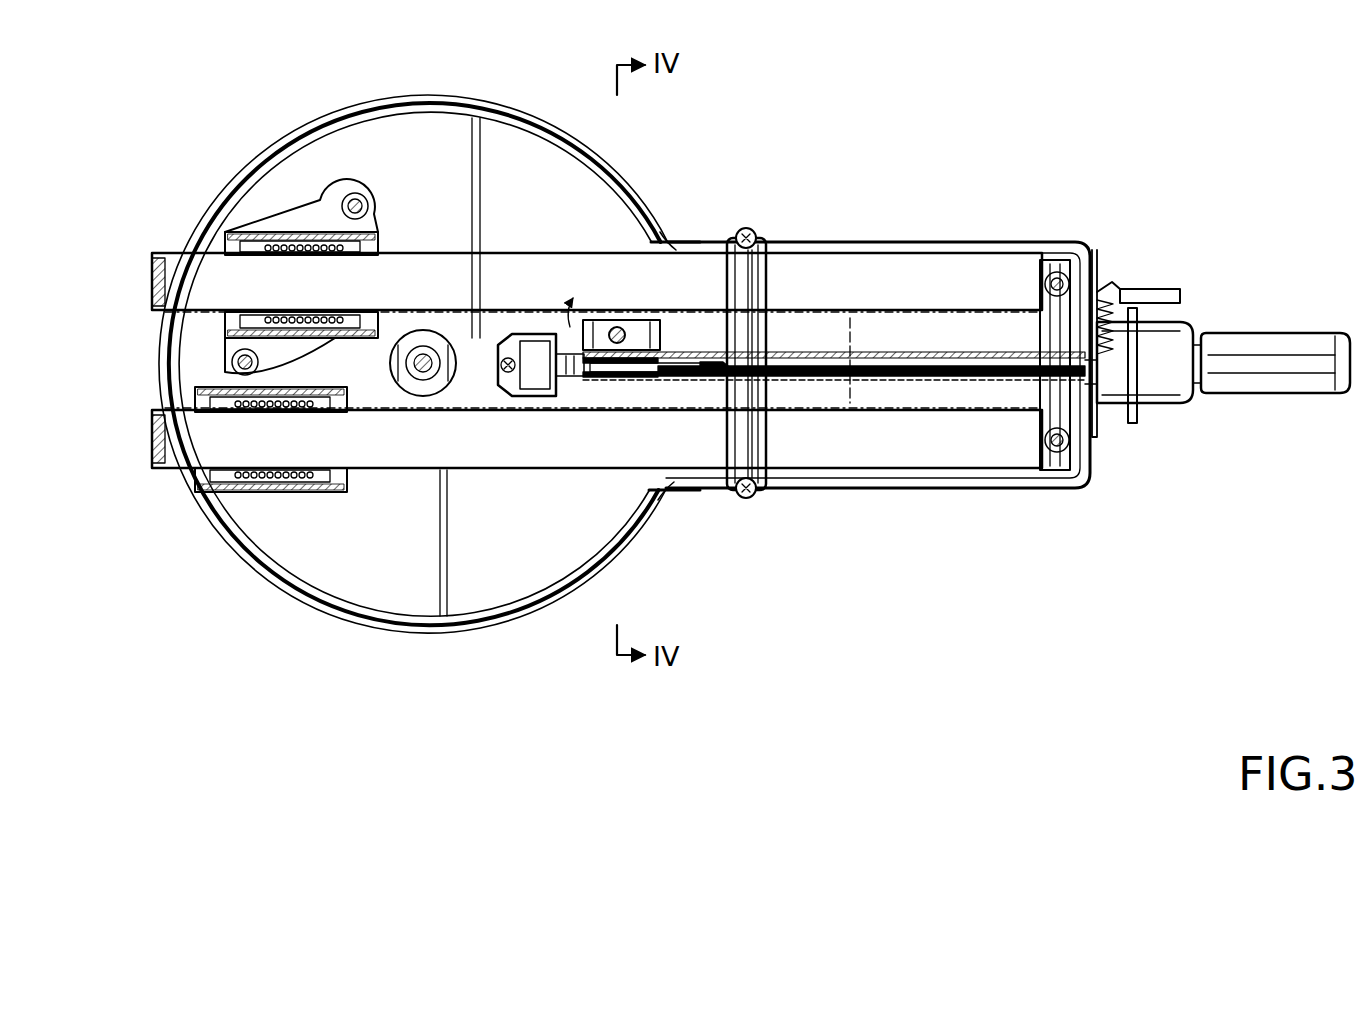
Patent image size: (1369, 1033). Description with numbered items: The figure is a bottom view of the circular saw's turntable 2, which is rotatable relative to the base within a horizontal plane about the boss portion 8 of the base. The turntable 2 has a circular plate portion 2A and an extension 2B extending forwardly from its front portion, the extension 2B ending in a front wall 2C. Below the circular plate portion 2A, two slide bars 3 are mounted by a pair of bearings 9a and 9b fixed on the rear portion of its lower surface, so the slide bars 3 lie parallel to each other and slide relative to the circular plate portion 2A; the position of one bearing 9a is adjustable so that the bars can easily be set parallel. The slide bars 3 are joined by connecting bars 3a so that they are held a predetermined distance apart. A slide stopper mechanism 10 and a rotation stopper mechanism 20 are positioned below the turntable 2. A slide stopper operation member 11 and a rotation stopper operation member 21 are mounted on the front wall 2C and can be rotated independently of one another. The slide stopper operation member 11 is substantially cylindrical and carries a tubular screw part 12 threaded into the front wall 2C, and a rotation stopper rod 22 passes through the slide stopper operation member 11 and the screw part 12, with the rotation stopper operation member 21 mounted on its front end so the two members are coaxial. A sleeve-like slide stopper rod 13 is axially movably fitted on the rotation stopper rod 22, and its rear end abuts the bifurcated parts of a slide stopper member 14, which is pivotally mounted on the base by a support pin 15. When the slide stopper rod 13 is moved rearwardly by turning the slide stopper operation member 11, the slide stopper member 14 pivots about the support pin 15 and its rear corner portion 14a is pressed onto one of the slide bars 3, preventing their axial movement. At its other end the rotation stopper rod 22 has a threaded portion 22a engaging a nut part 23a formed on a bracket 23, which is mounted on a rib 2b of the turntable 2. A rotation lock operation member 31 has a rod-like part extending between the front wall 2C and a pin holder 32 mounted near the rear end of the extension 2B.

The turntable 2 is at (770, 228).
The circular plate portion 2A is at (413, 95).
The rib 2b is at (443, 250).
The extension 2B is at (885, 242).
The front wall 2C is at (1118, 288).
The slide bars 3 is at (405, 285).
The connecting bars 3a is at (1050, 330).
The boss portion 8 is at (422, 400).
The bearing 9a is at (300, 232).
The bearing 9b is at (265, 495).
The slide stopper mechanism 10 is at (670, 334).
The slide stopper operation member 11 is at (1170, 407).
The screw part 12 is at (1095, 437).
The slide stopper rod 13 is at (850, 380).
The slide stopper member 14 is at (640, 330).
The rear corner portion 14a is at (607, 320).
The support pin 15 is at (619, 327).
The rotation stopper mechanism 20 is at (502, 392).
The rotation stopper operation member 21 is at (1262, 396).
The rotation stopper rod 22 is at (686, 372).
The threaded portion 22a is at (578, 372).
The bracket 23 is at (512, 338).
The nut part 23a is at (566, 380).
The rotation lock operation member 31 is at (950, 378).
The pin holder 32 is at (752, 432).